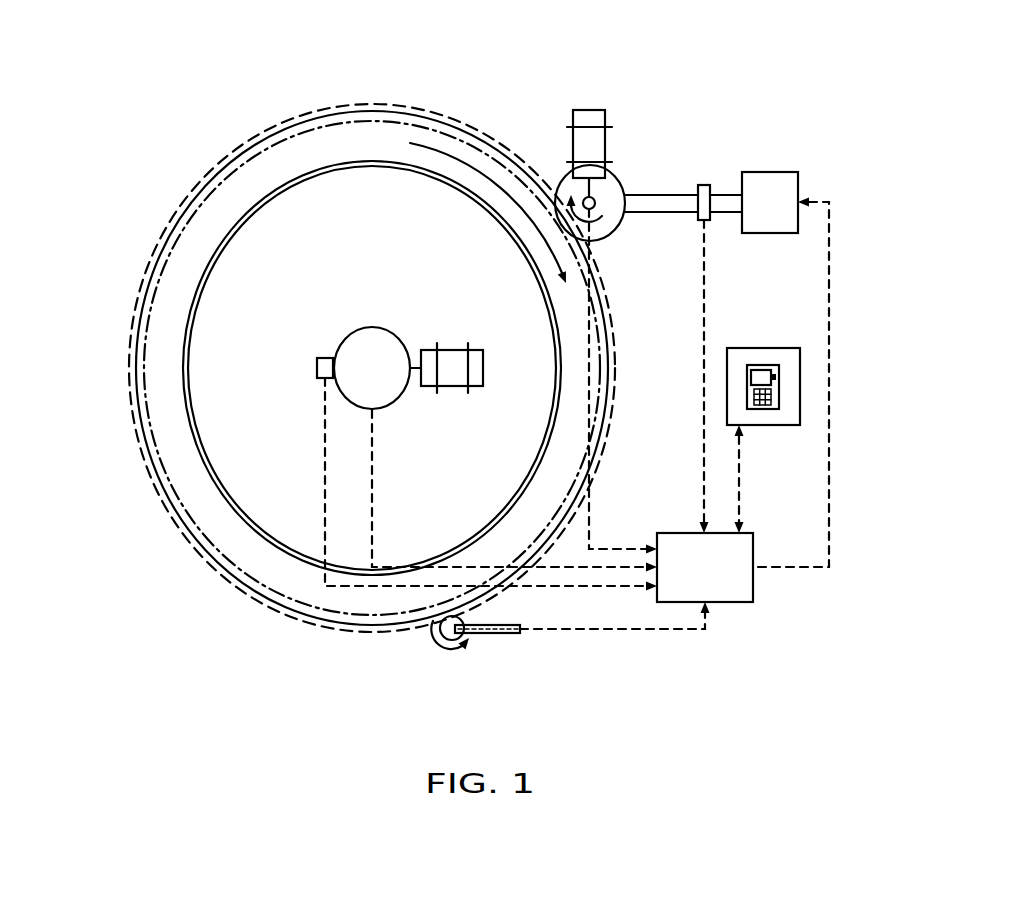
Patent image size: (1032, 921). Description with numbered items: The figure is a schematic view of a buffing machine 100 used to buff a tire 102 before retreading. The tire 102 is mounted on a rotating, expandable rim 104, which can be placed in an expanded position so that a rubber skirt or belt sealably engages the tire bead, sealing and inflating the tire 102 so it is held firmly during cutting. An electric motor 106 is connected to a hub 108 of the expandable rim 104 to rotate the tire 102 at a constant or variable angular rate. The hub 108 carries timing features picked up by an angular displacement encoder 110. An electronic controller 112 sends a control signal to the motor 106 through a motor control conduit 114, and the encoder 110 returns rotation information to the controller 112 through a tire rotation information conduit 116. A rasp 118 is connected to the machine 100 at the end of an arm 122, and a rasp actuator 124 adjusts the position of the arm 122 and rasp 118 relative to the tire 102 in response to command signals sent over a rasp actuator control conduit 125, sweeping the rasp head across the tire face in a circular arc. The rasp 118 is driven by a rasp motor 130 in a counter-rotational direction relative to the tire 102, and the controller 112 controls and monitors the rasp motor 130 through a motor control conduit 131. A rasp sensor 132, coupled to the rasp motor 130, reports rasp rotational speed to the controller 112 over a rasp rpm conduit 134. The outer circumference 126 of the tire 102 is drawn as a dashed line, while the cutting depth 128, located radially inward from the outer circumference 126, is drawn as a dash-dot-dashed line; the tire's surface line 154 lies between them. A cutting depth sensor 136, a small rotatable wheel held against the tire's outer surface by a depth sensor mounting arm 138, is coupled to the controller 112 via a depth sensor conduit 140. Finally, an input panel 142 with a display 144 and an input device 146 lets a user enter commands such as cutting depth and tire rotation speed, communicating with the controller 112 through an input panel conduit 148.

The buffing machine 100 is at (568, 76).
The tire 102 is at (333, 148).
The expandable rim 104 is at (220, 318).
The electric motor 106 is at (451, 386).
The hub 108 is at (375, 327).
The angular displacement encoder 110 is at (325, 358).
The electronic controller 112 is at (753, 590).
The motor control conduit 114 is at (373, 494).
The tire rotation information conduit 116 is at (325, 443).
The rasp 118 is at (618, 172).
The arm 122 is at (725, 212).
The rasp actuator 124 is at (768, 172).
The rasp actuator control conduit 125 is at (829, 265).
The outer circumference 126 is at (130, 368).
The cutting depth 128 is at (180, 505).
The rasp motor 130 is at (573, 148).
The motor control conduit 131 is at (590, 523).
The rasp sensor 132 is at (703, 185).
The rasp rpm conduit 134 is at (705, 447).
The cutting depth sensor 136 is at (462, 640).
The depth sensor mounting arm 138 is at (508, 633).
The depth sensor conduit 140 is at (660, 629).
The input panel 142 is at (762, 348).
The display 144 is at (776, 377).
The input device 146 is at (762, 409).
The input panel conduit 148 is at (745, 490).
The track surface 154 is at (147, 454).